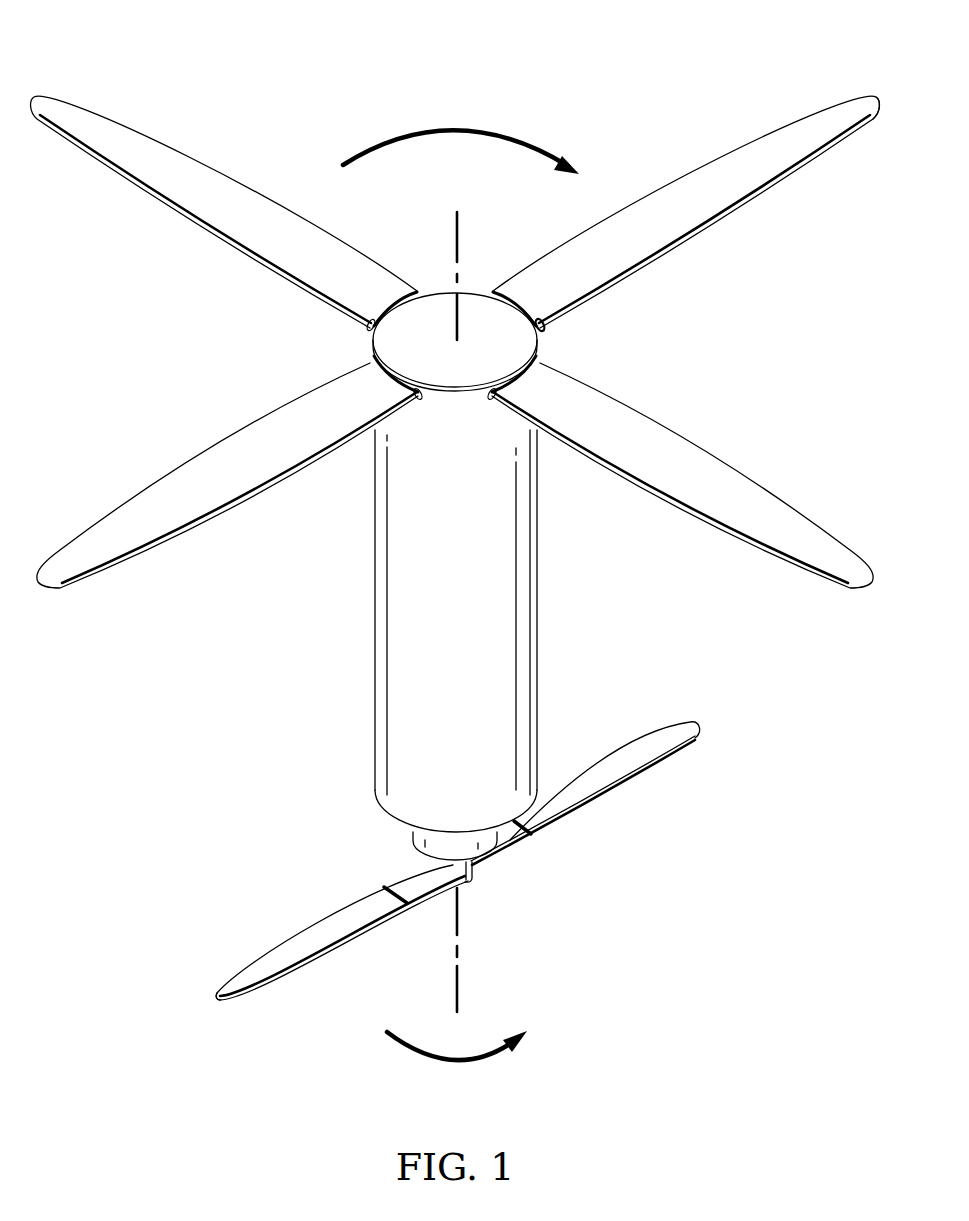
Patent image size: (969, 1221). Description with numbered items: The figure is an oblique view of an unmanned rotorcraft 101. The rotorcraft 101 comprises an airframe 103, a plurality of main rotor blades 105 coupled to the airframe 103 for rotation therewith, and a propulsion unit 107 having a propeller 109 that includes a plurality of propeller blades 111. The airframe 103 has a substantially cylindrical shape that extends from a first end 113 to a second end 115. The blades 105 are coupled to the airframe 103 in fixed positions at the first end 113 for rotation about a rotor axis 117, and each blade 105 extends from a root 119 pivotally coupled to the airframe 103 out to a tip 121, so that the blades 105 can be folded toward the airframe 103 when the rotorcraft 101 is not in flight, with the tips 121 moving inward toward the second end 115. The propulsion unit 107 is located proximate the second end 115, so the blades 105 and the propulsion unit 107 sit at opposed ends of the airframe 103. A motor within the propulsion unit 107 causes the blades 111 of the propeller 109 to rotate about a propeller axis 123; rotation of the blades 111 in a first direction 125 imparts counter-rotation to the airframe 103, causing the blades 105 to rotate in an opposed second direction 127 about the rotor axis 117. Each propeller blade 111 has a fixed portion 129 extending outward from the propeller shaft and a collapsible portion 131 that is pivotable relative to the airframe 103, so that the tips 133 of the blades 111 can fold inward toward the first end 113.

The unmanned rotorcraft 101 is at (598, 83).
The airframe 103 is at (412, 631).
The main rotor blades 105 is at (688, 170).
The propulsion unit 107 is at (413, 838).
The propeller 109 is at (640, 778).
The propeller blades 111 is at (302, 955).
The first end 113 is at (440, 292).
The second end 115 is at (382, 818).
The rotor axis 117 is at (462, 236).
The root 119 is at (538, 311).
The tip 121 is at (878, 98).
The propeller axis 123 is at (460, 990).
The first direction 125 is at (435, 1062).
The second direction 127 is at (455, 128).
The fixed portion 129 is at (437, 898).
The collapsible portion 131 is at (300, 945).
The tips 133 is at (222, 995).